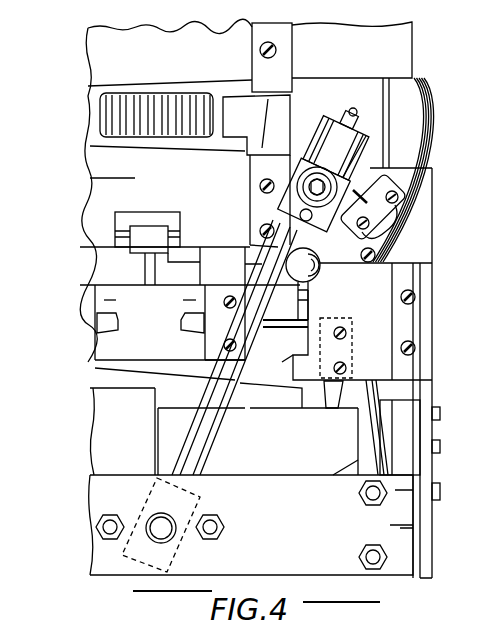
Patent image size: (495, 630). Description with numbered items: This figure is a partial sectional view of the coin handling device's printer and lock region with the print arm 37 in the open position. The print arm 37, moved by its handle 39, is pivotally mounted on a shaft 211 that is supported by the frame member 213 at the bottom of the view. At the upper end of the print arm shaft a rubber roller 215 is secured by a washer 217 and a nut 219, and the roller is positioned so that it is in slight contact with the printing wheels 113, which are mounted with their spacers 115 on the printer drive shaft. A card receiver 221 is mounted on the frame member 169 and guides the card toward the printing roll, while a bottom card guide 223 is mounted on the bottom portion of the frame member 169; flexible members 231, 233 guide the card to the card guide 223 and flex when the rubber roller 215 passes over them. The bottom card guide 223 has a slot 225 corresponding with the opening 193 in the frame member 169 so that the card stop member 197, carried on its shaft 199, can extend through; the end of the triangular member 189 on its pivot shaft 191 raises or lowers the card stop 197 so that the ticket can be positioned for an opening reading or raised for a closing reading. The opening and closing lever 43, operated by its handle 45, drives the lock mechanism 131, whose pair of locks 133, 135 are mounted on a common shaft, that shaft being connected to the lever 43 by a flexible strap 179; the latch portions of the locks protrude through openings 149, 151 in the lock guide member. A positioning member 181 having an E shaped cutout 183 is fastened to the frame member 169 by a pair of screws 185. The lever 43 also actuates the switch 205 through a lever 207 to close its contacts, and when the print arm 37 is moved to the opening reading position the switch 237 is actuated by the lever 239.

The card receiver 221 is at (90, 61).
The printing wheels 113 is at (145, 93).
The spacers 115 is at (193, 93).
The nut 219 is at (347, 108).
The flexible member 231 is at (270, 108).
The washer 217 is at (370, 138).
The rubber roller 215 is at (360, 159).
The flexible member 233 is at (253, 144).
The handle 39 is at (300, 193).
The switch 237 is at (398, 185).
The bottom card guide 223 is at (88, 214).
The slot 225 is at (131, 218).
The card stop member 197 is at (160, 230).
The shaft 199 is at (180, 228).
The frame member 169 is at (432, 248).
The lever 239 is at (336, 228).
The handle 45 is at (319, 269).
The triangular member 189 is at (145, 273).
The pivot shaft 191 is at (173, 252).
The opening 193 is at (204, 274).
The opening and closing lever 43 is at (304, 305).
The lever 207 is at (340, 316).
The screws 185 is at (415, 298).
The opening 151 is at (112, 318).
The opening 149 is at (190, 318).
The lock mechanism 131 is at (76, 336).
The lock 133 is at (104, 326).
The lock 135 is at (187, 327).
The flexible strap 179 is at (296, 327).
The E shaped cutout 183 is at (292, 357).
The positioning member 181 is at (385, 360).
The switch 205 is at (340, 383).
The print arm 37 is at (226, 389).
The shaft 211 is at (161, 518).
The frame member 213 is at (92, 511).